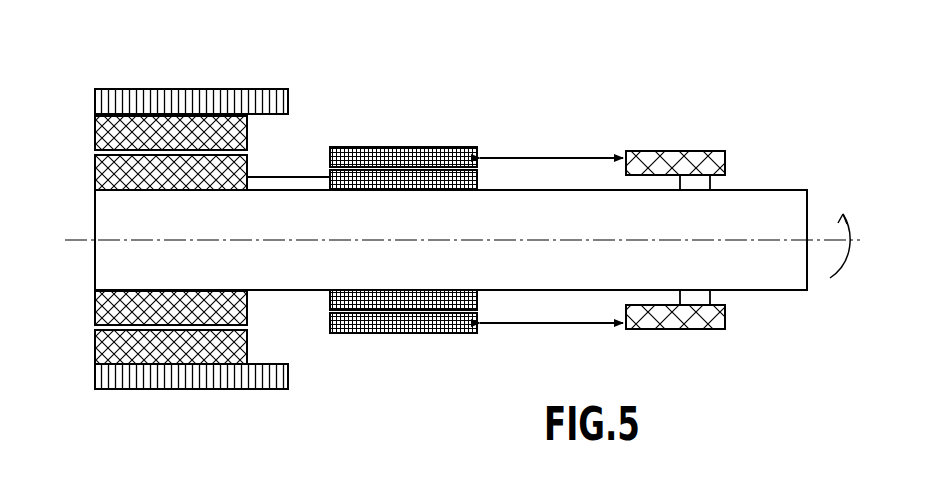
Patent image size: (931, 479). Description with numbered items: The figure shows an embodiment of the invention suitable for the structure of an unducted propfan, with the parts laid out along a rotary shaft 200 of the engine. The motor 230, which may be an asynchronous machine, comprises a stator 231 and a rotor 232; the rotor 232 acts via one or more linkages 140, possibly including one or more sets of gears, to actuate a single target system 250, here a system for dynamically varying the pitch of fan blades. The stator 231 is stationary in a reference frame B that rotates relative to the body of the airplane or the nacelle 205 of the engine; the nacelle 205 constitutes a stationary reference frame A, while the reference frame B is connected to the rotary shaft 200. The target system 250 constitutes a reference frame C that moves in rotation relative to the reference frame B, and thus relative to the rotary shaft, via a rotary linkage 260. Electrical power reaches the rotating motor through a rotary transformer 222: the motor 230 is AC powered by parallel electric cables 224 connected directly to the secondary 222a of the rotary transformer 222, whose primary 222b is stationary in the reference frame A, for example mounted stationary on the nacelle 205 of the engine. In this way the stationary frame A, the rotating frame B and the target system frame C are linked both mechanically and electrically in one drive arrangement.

The rotary shaft 200 is at (795, 192).
The nacelle 205 is at (177, 97).
The rotary transformer 222 is at (166, 239).
The secondary 222a is at (106, 317).
The primary 222b is at (108, 337).
The parallel electric cables 224 is at (272, 176).
The motor 230 is at (392, 215).
The stator 231 is at (329, 171).
The rotor 232 is at (453, 147).
The linkages 140 is at (554, 157).
The target system 250 is at (672, 151).
The rotary linkage 260 is at (696, 183).
The stationary reference frame A is at (126, 239).
The rotating reference frame B is at (532, 218).
The target system reference frame C is at (731, 241).